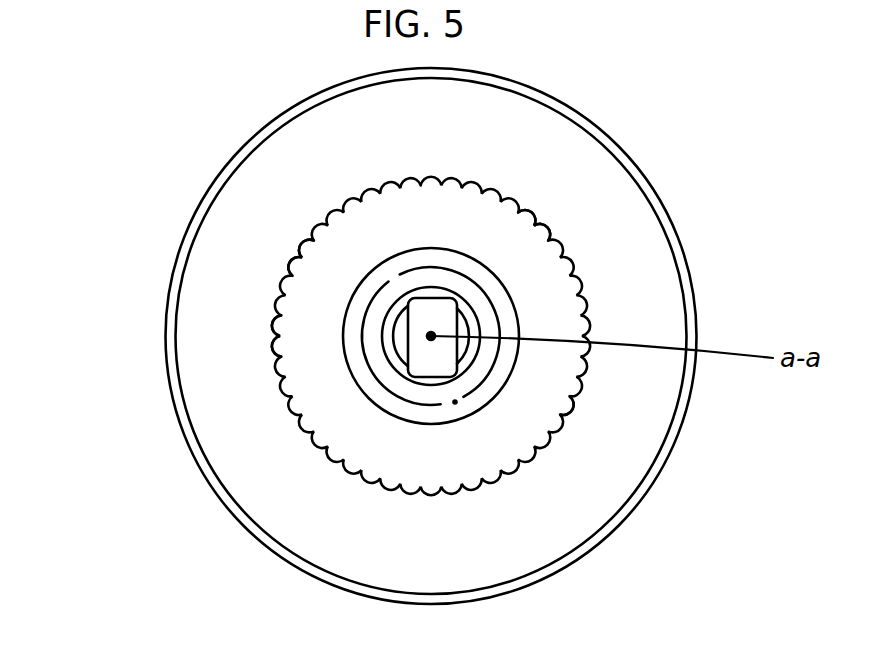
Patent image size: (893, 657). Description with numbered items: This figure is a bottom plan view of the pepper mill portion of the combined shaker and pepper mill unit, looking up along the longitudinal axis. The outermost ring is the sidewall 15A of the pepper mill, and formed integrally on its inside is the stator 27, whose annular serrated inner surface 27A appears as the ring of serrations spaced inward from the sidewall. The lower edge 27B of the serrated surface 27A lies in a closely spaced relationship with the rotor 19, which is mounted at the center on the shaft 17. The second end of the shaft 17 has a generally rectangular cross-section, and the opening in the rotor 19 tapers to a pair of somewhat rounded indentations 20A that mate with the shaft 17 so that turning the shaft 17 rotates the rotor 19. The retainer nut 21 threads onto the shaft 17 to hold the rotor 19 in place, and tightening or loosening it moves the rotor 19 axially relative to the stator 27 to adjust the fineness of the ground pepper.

The sidewall 15A is at (175, 300).
The stator 27 is at (227, 265).
The serrated inner surface 27A is at (267, 343).
The lower edge 27B is at (295, 250).
The rotor 19 is at (535, 282).
The retainer nut 21 is at (457, 267).
The shaft 17 is at (428, 358).
The rounded indentations 20A is at (407, 317).